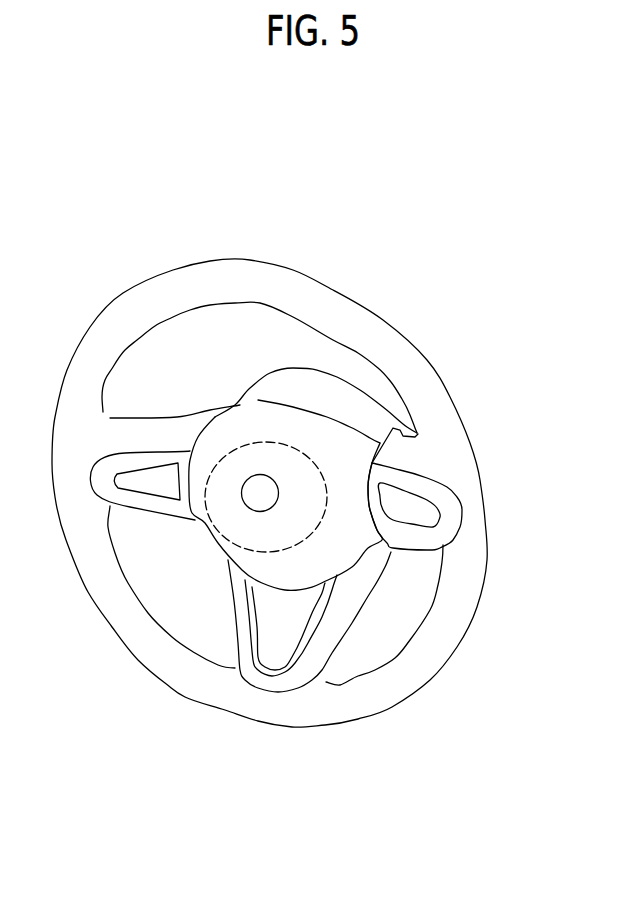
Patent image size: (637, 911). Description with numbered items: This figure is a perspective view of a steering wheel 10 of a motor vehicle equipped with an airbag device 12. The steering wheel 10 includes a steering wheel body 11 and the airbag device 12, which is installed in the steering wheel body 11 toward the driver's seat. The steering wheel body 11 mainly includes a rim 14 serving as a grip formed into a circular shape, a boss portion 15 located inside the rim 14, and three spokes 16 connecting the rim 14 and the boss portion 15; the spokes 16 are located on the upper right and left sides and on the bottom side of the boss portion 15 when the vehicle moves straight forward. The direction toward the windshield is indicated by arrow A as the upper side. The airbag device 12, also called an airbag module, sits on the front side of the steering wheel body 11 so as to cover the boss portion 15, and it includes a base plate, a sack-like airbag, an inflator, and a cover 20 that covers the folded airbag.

The steering wheel 10 is at (369, 238).
The steering wheel body 11 is at (434, 363).
The airbag device 12 is at (336, 376).
The rim 14 is at (447, 642).
The boss portion 15 is at (284, 352).
The spokes 16 is at (137, 418).
The cover 20 is at (240, 417).